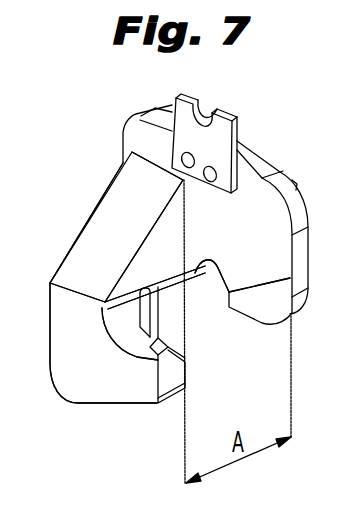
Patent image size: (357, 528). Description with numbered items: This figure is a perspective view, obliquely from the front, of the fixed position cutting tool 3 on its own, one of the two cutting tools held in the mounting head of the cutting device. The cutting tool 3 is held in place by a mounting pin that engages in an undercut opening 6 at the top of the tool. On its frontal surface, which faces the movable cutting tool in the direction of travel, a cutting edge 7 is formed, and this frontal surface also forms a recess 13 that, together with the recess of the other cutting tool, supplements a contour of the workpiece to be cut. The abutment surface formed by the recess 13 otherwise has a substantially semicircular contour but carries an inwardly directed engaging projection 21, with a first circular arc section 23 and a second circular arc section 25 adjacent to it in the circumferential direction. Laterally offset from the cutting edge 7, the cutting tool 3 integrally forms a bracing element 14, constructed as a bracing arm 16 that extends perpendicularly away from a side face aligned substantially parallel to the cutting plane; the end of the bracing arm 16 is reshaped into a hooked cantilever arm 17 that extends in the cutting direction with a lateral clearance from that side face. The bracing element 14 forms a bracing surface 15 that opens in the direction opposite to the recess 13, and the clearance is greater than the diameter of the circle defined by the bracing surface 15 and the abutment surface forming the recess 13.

The fixed position cutting tool 3 is at (230, 238).
The undercut opening 6 is at (206, 114).
The cutting edge 7 is at (229, 292).
The recess 13 is at (212, 298).
The bracing element 14 is at (96, 227).
The bracing surface 15 is at (133, 342).
The bracing arm 16 is at (128, 190).
The cantilever arm 17 is at (107, 375).
The engaging projection 21 is at (197, 274).
The first circular arc section 23 is at (187, 267).
The second circular arc section 25 is at (230, 291).